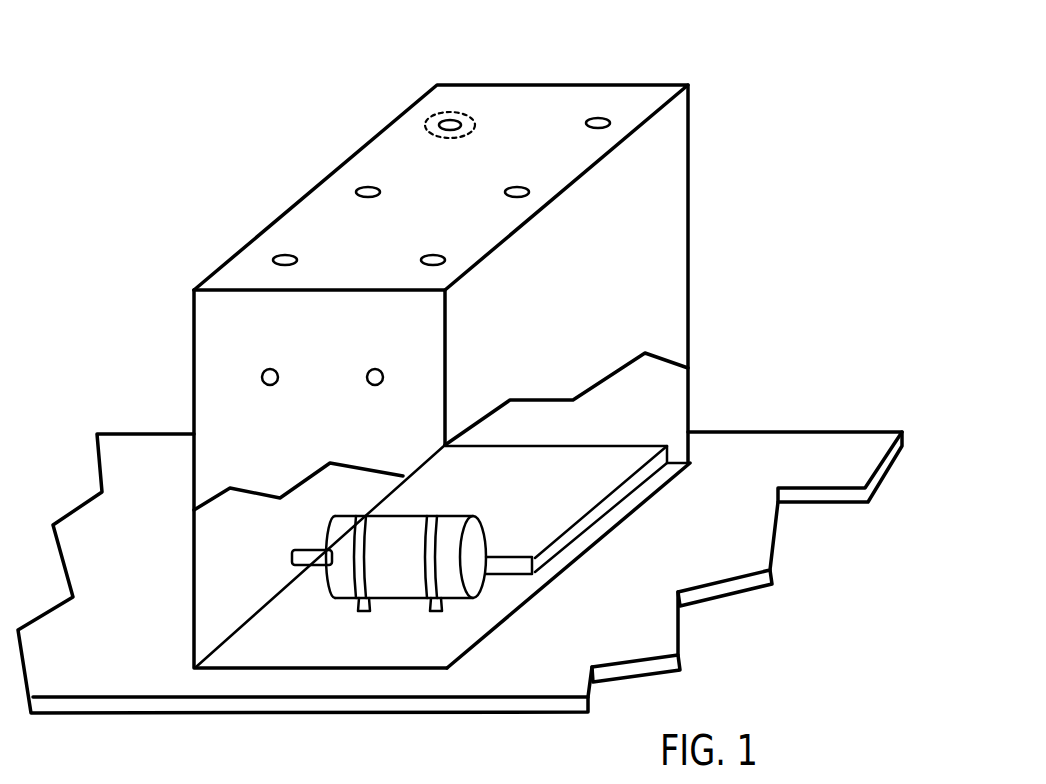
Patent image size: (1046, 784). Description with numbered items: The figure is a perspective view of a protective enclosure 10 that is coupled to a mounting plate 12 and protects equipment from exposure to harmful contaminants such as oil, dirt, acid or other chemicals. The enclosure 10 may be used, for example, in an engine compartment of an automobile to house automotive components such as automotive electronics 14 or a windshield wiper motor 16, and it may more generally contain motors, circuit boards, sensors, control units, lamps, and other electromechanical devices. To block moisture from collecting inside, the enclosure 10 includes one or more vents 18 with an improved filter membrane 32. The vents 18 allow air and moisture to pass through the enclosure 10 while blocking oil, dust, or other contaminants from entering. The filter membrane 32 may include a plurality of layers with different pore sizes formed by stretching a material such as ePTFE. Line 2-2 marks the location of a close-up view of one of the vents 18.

The enclosure 10 is at (712, 67).
The mounting plate 12 is at (793, 447).
The automotive electronics 14 is at (598, 452).
The windshield wiper motor 16 is at (342, 587).
The line 2- 2 is at (430, 117).
The vents 18 is at (386, 251).
The filter membrane 32 is at (357, 187).